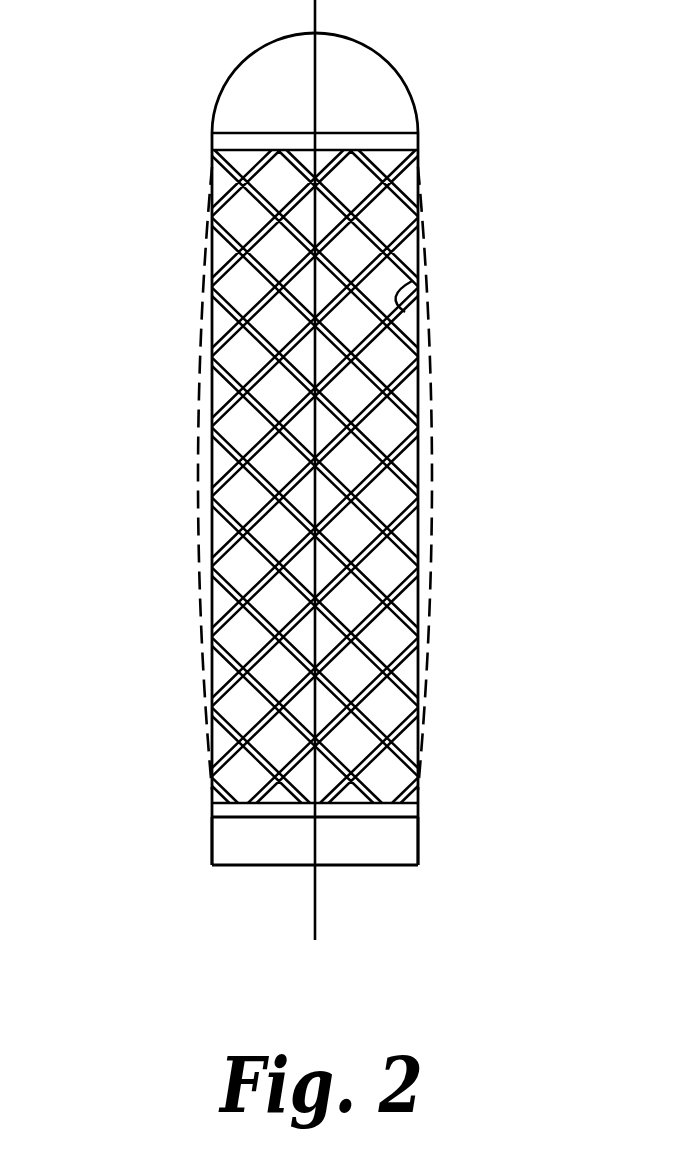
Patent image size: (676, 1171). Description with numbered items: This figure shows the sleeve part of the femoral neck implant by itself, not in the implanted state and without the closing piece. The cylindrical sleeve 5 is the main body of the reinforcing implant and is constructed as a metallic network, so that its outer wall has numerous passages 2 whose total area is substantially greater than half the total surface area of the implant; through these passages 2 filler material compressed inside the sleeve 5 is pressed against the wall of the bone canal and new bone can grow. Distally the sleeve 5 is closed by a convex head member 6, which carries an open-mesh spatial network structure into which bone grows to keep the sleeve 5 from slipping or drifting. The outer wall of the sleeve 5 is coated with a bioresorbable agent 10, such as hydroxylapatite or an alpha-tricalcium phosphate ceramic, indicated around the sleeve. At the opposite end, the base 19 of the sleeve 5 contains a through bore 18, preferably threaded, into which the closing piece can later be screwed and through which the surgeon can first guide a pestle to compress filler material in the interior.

The passages 2 is at (425, 312).
The cylindrical sleeve 5 is at (394, 499).
The convex head member 6 is at (362, 72).
The bioresorbable agent 10 is at (199, 501).
The through bore 18 is at (225, 795).
The base 19 is at (402, 842).